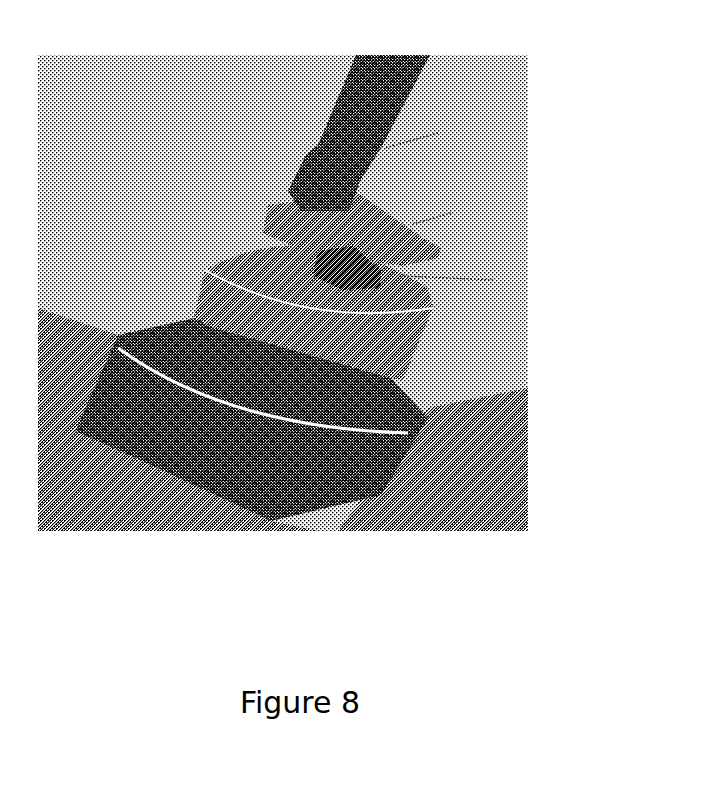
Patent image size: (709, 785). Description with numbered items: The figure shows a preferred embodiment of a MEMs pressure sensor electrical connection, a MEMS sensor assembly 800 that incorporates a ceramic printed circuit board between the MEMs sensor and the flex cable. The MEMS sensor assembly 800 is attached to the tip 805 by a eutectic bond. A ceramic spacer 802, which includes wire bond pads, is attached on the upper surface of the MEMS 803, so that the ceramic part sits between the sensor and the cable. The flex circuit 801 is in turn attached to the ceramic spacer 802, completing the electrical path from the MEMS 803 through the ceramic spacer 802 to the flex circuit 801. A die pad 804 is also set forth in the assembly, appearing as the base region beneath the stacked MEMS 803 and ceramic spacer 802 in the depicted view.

The MEMS sensor assembly 800 is at (283, 332).
The flex circuit 801 is at (482, 133).
The ceramic spacer 802 is at (463, 223).
The MEMS 803 is at (494, 278).
The die pad 804 is at (432, 321).
The tip 805 is at (152, 337).